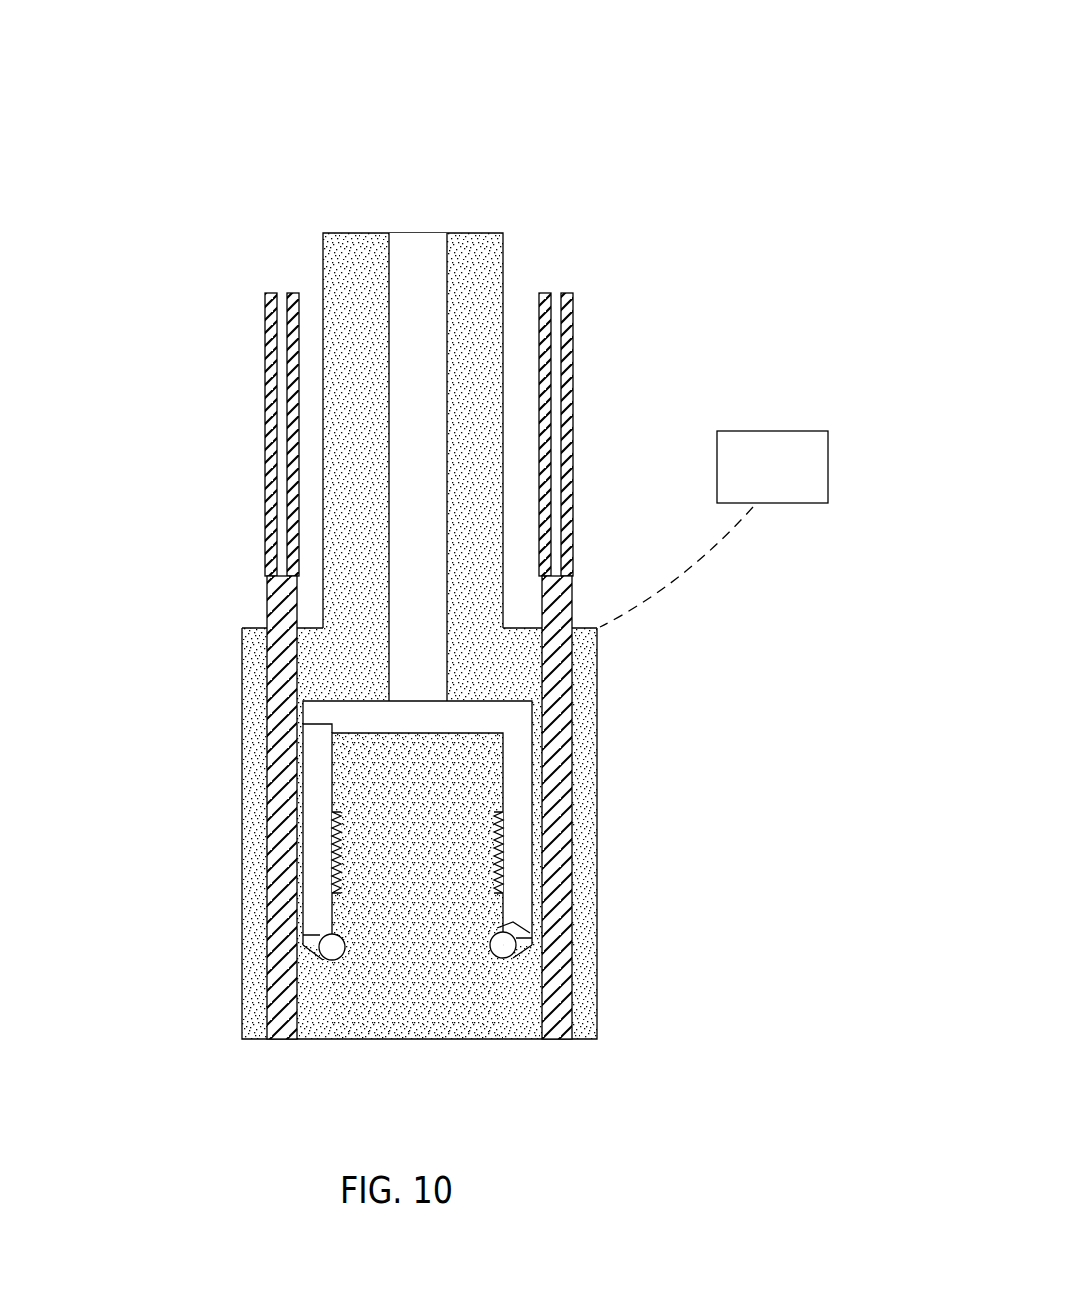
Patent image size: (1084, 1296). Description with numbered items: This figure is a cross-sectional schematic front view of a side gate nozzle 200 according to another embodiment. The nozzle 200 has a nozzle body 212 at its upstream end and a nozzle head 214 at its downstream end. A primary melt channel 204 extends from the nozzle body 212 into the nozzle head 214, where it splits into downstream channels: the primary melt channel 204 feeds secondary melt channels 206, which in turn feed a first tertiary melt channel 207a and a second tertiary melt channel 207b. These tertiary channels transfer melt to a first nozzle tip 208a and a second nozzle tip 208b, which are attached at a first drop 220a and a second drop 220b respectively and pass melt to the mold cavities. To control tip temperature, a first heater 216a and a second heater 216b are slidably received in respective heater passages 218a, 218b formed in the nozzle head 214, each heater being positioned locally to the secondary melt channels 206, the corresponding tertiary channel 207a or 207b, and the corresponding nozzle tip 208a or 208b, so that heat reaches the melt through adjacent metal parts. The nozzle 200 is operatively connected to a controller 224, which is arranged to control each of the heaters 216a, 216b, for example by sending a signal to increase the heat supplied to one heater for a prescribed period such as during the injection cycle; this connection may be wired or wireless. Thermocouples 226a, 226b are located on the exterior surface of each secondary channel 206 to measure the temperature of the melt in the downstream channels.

The nozzle 200 is at (580, 48).
The primary melt channel 204 is at (415, 323).
The secondary melt channel 206 is at (315, 885).
The first tertiary melt channel 207a is at (315, 940).
The second tertiary melt channel 207b is at (518, 940).
The first nozzle tip 208a is at (275, 788).
The second nozzle tip 208b is at (560, 797).
The nozzle body 212 is at (468, 248).
The nozzle head 214 is at (583, 700).
The first heater 216a is at (265, 407).
The second heater 216b is at (571, 362).
The first heater passage 218a is at (263, 990).
The second heater passage 218b is at (570, 999).
The first drop 220a is at (296, 1084).
The second drop 220b is at (500, 952).
The controller 224 is at (714, 529).
The first thermocouple 226a is at (330, 838).
The second thermocouple 226b is at (505, 822).